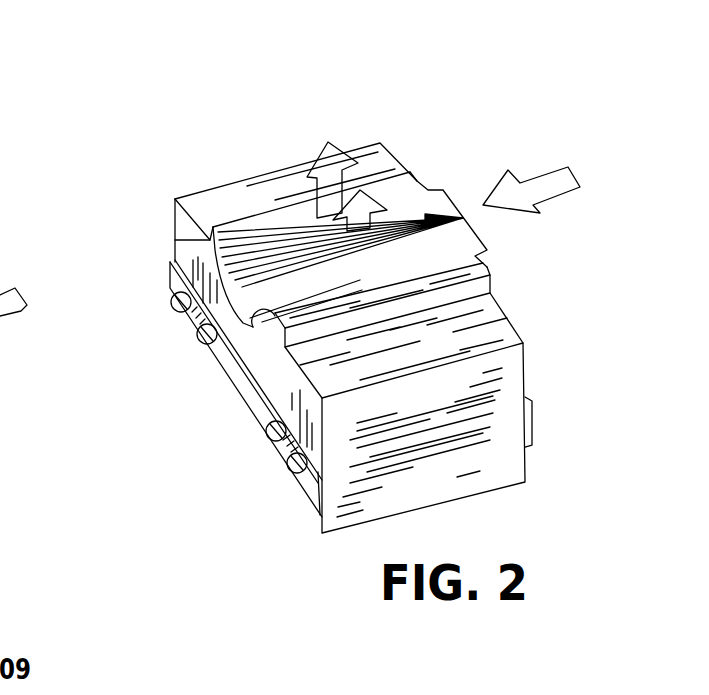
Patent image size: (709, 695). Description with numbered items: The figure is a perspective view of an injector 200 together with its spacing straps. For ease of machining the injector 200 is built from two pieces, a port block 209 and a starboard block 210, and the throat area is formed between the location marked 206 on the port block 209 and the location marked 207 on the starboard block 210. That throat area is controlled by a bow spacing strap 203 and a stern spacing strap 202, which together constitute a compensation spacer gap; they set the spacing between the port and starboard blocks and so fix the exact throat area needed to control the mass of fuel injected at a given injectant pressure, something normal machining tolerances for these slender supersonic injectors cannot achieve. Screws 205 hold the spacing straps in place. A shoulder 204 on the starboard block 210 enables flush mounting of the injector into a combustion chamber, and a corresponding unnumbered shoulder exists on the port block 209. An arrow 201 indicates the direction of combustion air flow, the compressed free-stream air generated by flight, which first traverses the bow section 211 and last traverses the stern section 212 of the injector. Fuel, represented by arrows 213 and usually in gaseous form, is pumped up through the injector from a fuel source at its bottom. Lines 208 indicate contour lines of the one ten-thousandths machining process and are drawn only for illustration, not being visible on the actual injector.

The injector 200 is at (523, 296).
The arrow 201 is at (543, 187).
The stern spacing strap 202 is at (300, 478).
The bow spacing strap 203 is at (532, 430).
The shoulder 204 is at (273, 340).
The screws 205 is at (170, 298).
The throat area reference on port block 206 is at (205, 332).
The throat area reference on starboard block 207 is at (240, 329).
The contour lines 208 is at (248, 250).
The port block 209 is at (203, 205).
The starboard block 210 is at (527, 343).
The bow section 211 is at (418, 202).
The stern section 212 is at (177, 240).
The arrows 213 is at (305, 175).